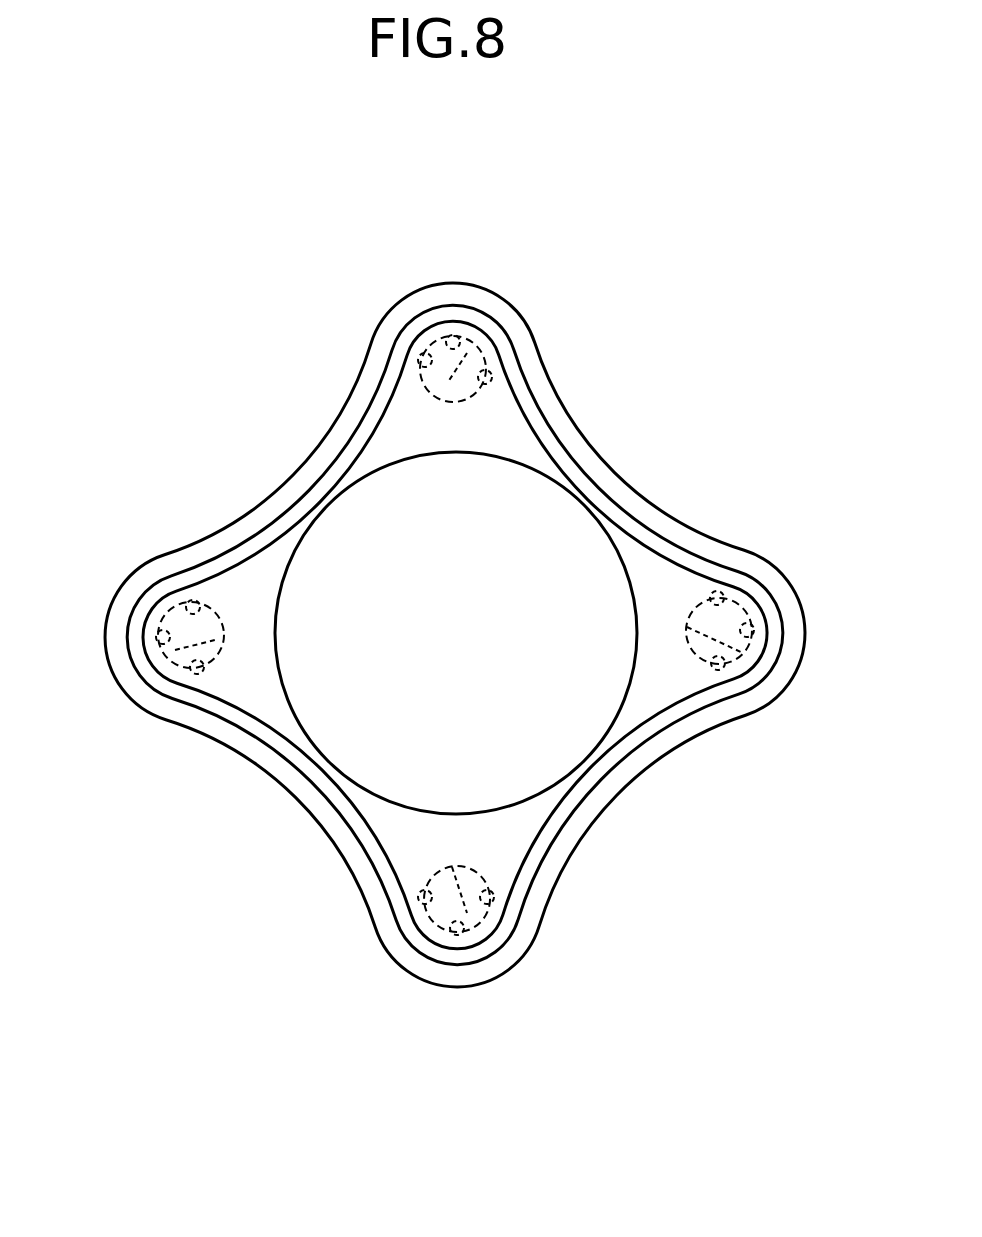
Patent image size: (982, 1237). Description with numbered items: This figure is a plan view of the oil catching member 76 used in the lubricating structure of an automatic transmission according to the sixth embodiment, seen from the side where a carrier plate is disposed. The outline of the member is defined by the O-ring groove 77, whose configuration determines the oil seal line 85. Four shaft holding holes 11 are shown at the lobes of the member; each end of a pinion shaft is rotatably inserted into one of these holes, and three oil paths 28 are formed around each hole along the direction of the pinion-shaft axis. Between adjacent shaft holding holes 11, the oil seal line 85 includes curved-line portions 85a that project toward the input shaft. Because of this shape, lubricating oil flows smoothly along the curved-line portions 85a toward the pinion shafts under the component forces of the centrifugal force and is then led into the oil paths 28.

The shaft holding hole 11 is at (497, 332).
The oil path 28 is at (437, 347).
The oil catching member 76 is at (630, 468).
The O-ring groove 77 is at (622, 512).
The oil seal line 85 is at (650, 542).
The curved-line portion 85a is at (567, 458).